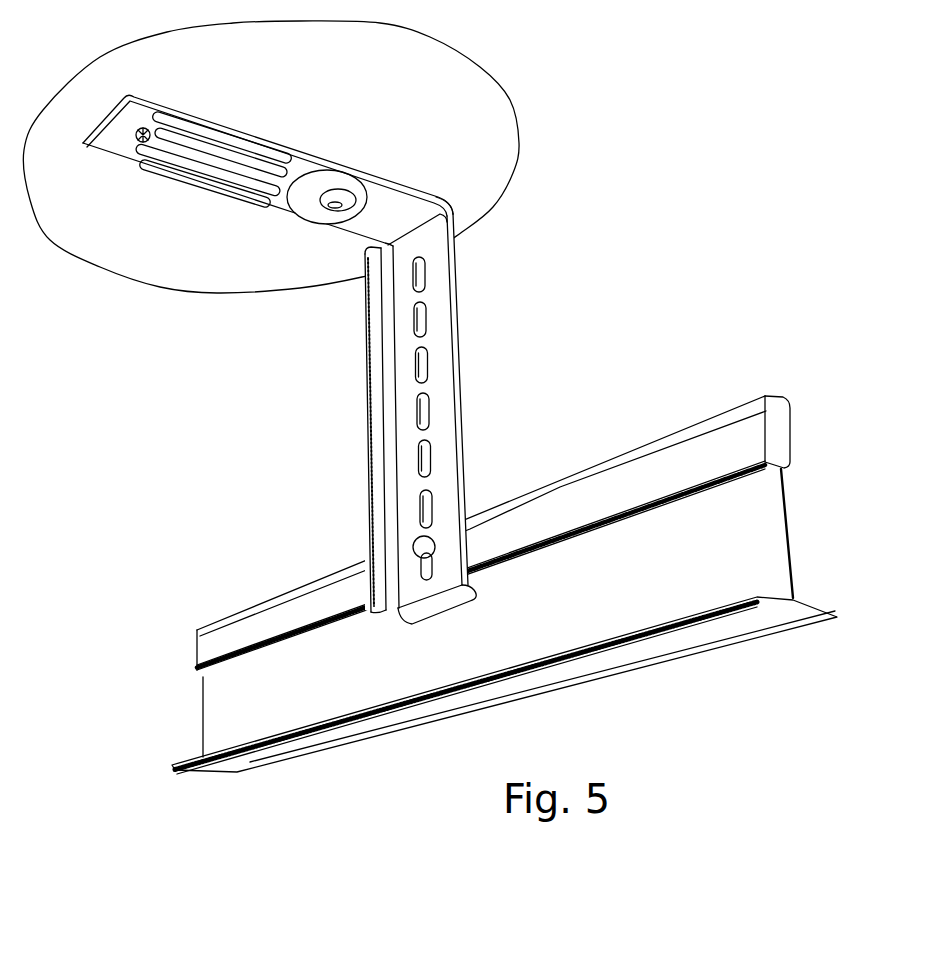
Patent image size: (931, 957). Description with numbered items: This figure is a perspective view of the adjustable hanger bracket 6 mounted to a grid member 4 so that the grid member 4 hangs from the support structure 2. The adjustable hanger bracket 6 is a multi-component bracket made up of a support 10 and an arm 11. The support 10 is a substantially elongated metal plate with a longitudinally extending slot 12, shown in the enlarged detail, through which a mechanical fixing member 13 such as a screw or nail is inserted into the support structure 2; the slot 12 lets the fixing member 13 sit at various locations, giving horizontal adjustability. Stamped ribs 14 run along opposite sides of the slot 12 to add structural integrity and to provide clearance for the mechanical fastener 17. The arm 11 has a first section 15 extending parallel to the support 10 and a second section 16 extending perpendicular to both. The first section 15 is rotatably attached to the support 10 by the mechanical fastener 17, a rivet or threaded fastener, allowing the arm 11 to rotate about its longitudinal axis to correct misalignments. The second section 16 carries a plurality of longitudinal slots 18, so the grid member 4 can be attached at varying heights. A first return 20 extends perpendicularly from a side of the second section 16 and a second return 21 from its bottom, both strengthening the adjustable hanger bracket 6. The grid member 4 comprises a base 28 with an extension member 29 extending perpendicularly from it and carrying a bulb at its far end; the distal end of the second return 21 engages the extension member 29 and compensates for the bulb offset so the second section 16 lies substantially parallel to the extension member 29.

The support structure 2 is at (425, 55).
The grid member 4 is at (227, 700).
The adjustable hanger bracket 6 is at (370, 462).
The support 10 is at (130, 110).
The arm 11 is at (437, 233).
The slot 12 is at (240, 160).
The mechanical fixing member 13 is at (143, 135).
The ribs 14 is at (190, 128).
The first section 15 is at (392, 197).
The second section 16 is at (437, 387).
The mechanical fastener 17 is at (338, 197).
The slots 18 is at (420, 320).
The first return 20 is at (373, 373).
The second return 21 is at (452, 605).
The base 28 is at (225, 638).
The extension member 29 is at (320, 742).